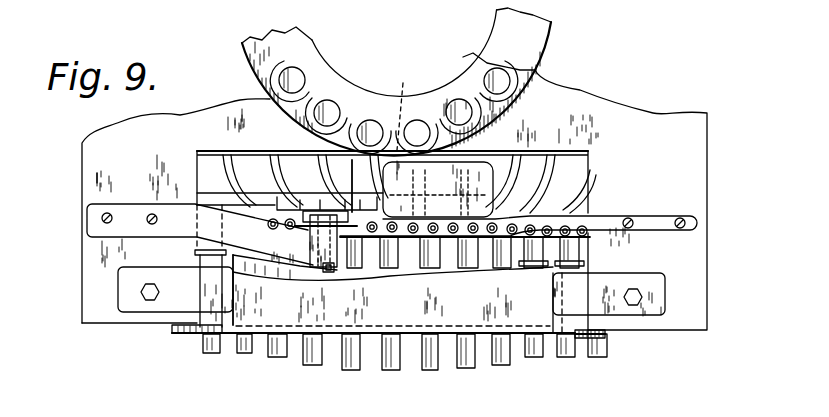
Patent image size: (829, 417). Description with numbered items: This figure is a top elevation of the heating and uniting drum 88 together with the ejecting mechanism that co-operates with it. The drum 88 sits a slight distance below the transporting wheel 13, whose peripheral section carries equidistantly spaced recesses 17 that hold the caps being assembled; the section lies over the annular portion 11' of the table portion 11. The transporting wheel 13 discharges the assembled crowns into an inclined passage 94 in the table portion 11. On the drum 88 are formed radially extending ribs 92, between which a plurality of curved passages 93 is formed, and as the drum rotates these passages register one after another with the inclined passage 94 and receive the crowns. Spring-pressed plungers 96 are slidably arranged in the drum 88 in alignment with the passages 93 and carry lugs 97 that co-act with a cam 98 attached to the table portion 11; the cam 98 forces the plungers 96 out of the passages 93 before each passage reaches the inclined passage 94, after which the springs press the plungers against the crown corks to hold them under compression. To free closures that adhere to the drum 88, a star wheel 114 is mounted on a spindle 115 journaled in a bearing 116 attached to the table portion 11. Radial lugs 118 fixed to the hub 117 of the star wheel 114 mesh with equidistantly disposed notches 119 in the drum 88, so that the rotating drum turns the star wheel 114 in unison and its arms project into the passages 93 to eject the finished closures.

The table portion 11 is at (394, 195).
The annular portion of the table 11' is at (415, 82).
The transporting wheel 13 is at (395, 82).
The recesses 17 is at (370, 120).
The inclined passage 94 is at (403, 108).
The heating and uniting drum 88 is at (578, 170).
The curved passages 93 is at (287, 167).
The radially extending ribs 92 is at (547, 170).
The hub of the star wheel 117 is at (328, 212).
The star wheel 114 is at (351, 200).
The notches 119 is at (433, 222).
The lugs 97 is at (580, 262).
The radial lugs 118 is at (300, 231).
The bearing 116 is at (300, 257).
The spindle 115 is at (333, 272).
The cam 98 is at (412, 278).
The spring-pressed plungers 96 is at (437, 371).